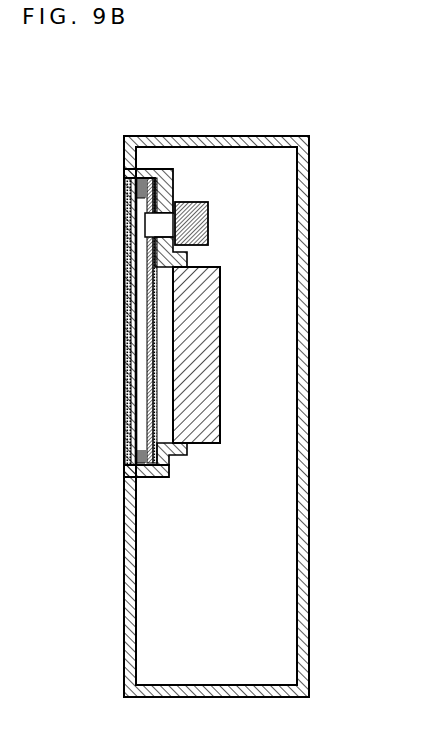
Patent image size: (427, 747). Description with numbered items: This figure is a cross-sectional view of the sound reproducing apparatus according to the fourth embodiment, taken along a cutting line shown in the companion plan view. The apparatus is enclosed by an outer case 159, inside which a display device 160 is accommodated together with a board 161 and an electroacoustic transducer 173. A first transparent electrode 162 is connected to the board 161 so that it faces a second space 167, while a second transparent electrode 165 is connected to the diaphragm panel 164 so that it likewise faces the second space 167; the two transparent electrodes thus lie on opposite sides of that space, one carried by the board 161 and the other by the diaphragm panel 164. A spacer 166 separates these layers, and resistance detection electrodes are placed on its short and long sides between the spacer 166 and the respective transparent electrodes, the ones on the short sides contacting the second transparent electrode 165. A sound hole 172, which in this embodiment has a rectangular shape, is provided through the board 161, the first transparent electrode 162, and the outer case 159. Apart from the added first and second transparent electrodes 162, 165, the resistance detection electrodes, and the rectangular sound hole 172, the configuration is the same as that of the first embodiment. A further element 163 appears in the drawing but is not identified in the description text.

The outer case 159 is at (309, 285).
The display device 160 is at (220, 403).
The board 161 is at (157, 433).
The first transparent electrode 162 is at (130, 431).
The holder 163 is at (163, 416).
The diaphragm panel 164 is at (135, 282).
The second transparent electrode 165 is at (130, 313).
The spacer 166 is at (145, 169).
The second space 167 is at (140, 375).
The sound hole 172 is at (163, 222).
The electroacoustic transducer 173 is at (208, 232).